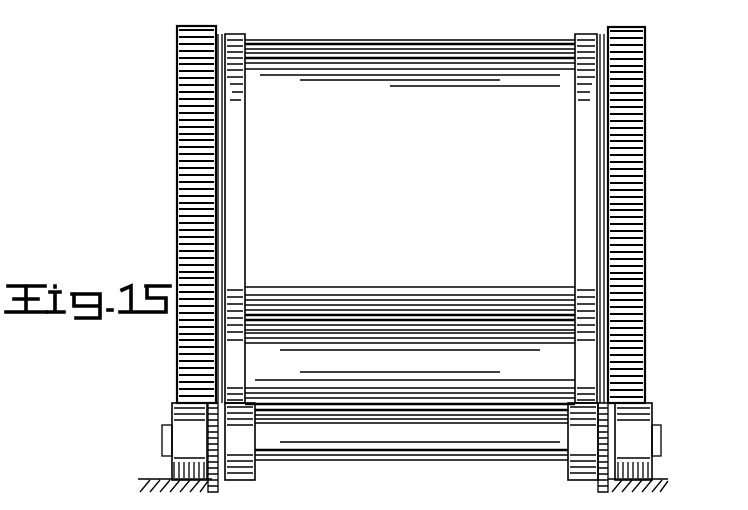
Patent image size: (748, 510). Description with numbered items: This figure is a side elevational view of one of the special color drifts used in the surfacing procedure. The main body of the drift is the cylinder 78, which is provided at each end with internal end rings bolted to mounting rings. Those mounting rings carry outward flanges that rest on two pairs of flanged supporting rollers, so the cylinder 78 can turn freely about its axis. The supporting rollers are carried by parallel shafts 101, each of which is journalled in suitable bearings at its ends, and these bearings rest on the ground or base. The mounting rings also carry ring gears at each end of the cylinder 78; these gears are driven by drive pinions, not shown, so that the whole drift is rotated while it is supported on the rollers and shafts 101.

The cylinder 78 is at (470, 55).
The shaft 101 is at (483, 443).